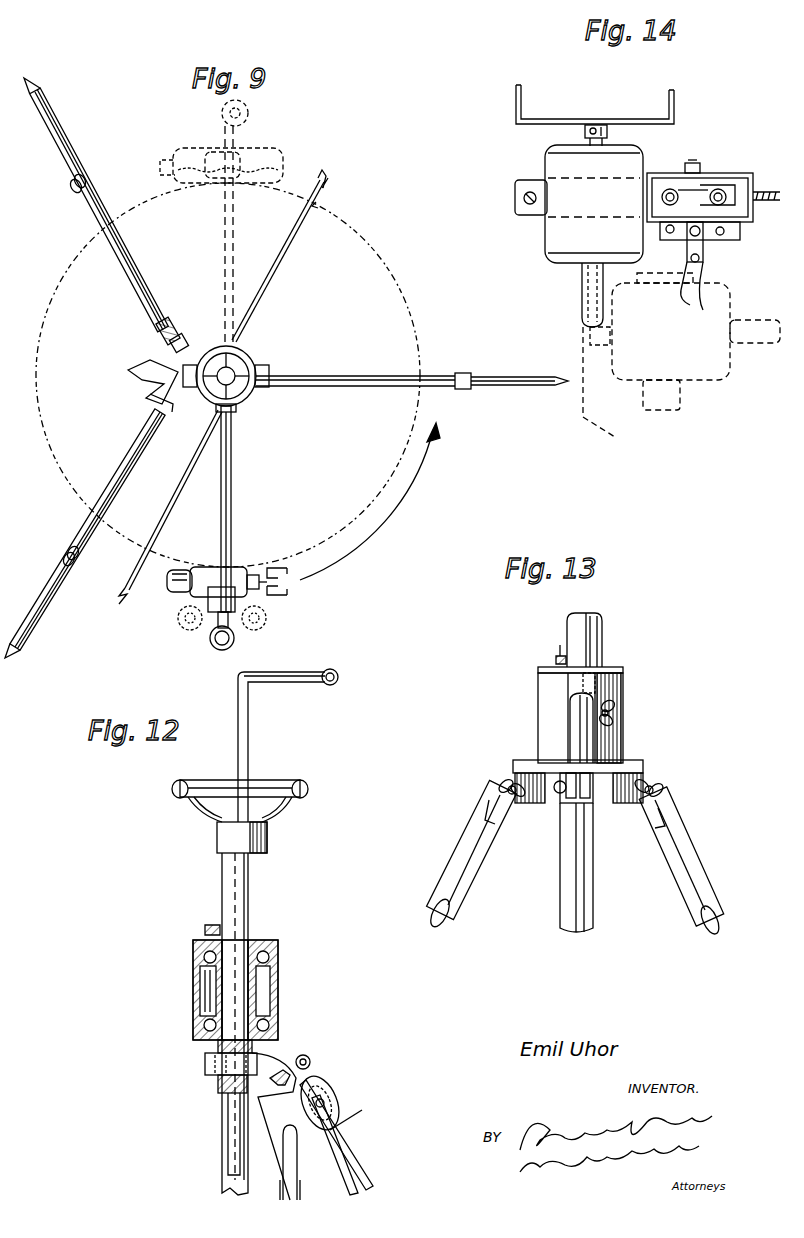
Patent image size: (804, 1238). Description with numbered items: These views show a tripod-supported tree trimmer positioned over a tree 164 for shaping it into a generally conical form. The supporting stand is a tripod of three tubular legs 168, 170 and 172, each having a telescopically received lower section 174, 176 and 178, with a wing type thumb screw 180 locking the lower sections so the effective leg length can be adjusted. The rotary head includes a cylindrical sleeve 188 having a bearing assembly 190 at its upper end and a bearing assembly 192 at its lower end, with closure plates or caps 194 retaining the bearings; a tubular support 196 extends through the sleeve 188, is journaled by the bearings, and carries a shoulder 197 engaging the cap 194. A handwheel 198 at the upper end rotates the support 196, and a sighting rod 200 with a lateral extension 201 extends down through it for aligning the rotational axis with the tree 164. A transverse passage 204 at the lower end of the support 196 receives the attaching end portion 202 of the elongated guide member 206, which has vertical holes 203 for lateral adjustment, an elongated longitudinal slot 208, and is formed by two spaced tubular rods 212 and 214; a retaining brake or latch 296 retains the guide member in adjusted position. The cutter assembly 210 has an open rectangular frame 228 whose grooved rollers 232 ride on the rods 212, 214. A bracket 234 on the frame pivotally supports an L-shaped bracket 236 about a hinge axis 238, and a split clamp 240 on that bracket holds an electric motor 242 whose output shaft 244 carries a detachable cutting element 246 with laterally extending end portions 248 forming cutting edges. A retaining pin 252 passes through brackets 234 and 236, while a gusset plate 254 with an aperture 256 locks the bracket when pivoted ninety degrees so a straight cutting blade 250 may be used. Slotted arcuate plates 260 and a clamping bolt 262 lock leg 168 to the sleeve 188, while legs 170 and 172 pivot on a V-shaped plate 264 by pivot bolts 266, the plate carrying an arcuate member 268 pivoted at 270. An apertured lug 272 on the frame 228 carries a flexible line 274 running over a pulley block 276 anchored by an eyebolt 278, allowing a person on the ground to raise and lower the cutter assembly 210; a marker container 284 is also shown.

In FIG. 9, the tree 164 is at (373, 262).
In FIG. 9, the tubular leg 168 is at (312, 376).
In FIG. 13, the tubular leg 168 is at (580, 874).
In FIG. 9, the tubular leg 170 is at (96, 199).
In FIG. 13, the tubular leg 170 is at (462, 872).
In FIG. 9, the tubular leg 172 is at (85, 528).
In FIG. 13, the tubular leg 172 is at (700, 868).
In FIG. 9, the lower section 174 is at (498, 377).
In FIG. 9, the lower section 176 is at (47, 120).
In FIG. 9, the lower section 178 is at (52, 595).
In FIG. 9, the wing type thumb screw 180 is at (465, 373).
In FIG. 13, the cylindrical sleeve 188 is at (620, 692).
In FIG. 12, the cylindrical sleeve 188 is at (275, 1000).
In FIG. 12, the bearing assembly 190 is at (276, 962).
In FIG. 12, the bearing assembly 192 is at (268, 1028).
In FIG. 12, the closure plates or caps 194 is at (272, 950).
In FIG. 13, the tubular support 196 is at (596, 613).
In FIG. 12, the tubular support 196 is at (236, 878).
In FIG. 12, the shoulder 197 is at (258, 935).
In FIG. 9, the handwheel 198 is at (246, 357).
In FIG. 12, the handwheel 198 is at (318, 779).
In FIG. 12, the sighting rod 200 is at (250, 745).
In FIG. 12, the lateral extension 201 is at (303, 672).
In FIG. 12, the attaching end portion 202 is at (205, 1063).
In FIG. 12, the vertical holes 203 is at (262, 1052).
In FIG. 12, the transverse passage 204 is at (218, 1082).
In FIG. 12, the elongated guide member 206 is at (271, 1155).
In FIG. 12, the elongated longitudinal slot 208 is at (330, 1195).
In FIG. 12, the cutter assembly 210 is at (315, 1168).
In FIG. 14, the tubular rod 212 is at (668, 188).
In FIG. 12, the tubular rod 212 is at (312, 1168).
In FIG. 14, the tubular rod 214 is at (728, 190).
In FIG. 14, the open rectangular frame 228 is at (716, 188).
In FIG. 14, the grooved rollers 232 is at (680, 185).
In FIG. 14, the bracket 234 is at (740, 232).
In FIG. 14, the L-shaped bracket 236 is at (650, 186).
In FIG. 14, the hinge axis 238 is at (702, 240).
In FIG. 14, the split clamp 240 is at (520, 202).
In FIG. 9, the electric motor 242 is at (236, 575).
In FIG. 14, the electric motor 242 is at (560, 165).
In FIG. 14, the output shaft 244 is at (587, 140).
In FIG. 14, the detachable cutting element 246 is at (611, 119).
In FIG. 9, the laterally extending end portions 248 is at (288, 588).
In FIG. 14, the laterally extending end portions 248 is at (516, 89).
In FIG. 14, the straight cutting blade 250 is at (612, 390).
In FIG. 14, the retaining pin or bolt 252 is at (666, 229).
In FIG. 14, the gusset plate 254 is at (686, 268).
In FIG. 14, the aperture 256 is at (702, 282).
In FIG. 13, the slotted arcuate plates 260 is at (596, 680).
In FIG. 13, the clamping bolt 262 is at (612, 712).
In FIG. 9, the V-shaped plate 264 is at (128, 370).
In FIG. 13, the V-shaped plate 264 is at (640, 775).
In FIG. 9, the pivot bolts 266 is at (172, 325).
In FIG. 13, the pivot bolts 266 is at (500, 785).
In FIG. 9, the arcuate member 268 is at (182, 350).
In FIG. 13, the arcuate member 268 is at (570, 722).
In FIG. 9, the pivot 270 is at (150, 394).
In FIG. 13, the pivot 270 is at (605, 765).
In FIG. 14, the apertured lug 272 is at (764, 192).
In FIG. 9, the flexible line or rope 274 is at (167, 519).
In FIG. 12, the pulley block 276 is at (320, 1082).
In FIG. 12, the eyebolt 278 is at (310, 1058).
In FIG. 9, the container 284 is at (214, 648).
In FIG. 13, the retaining brake or latch 296 is at (554, 658).
In FIG. 12, the retaining brake or latch 296 is at (205, 929).